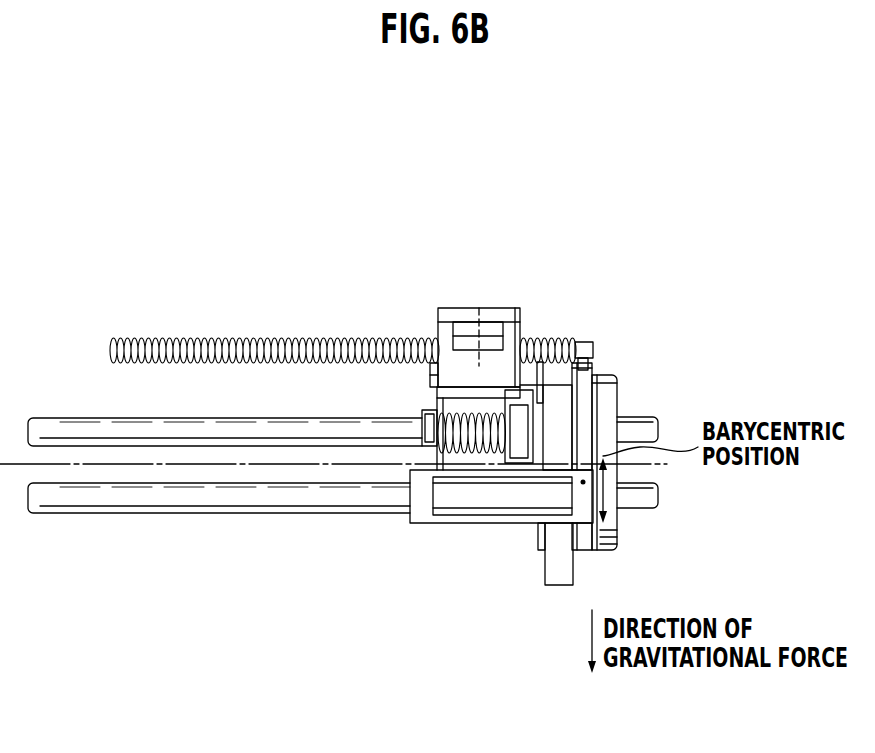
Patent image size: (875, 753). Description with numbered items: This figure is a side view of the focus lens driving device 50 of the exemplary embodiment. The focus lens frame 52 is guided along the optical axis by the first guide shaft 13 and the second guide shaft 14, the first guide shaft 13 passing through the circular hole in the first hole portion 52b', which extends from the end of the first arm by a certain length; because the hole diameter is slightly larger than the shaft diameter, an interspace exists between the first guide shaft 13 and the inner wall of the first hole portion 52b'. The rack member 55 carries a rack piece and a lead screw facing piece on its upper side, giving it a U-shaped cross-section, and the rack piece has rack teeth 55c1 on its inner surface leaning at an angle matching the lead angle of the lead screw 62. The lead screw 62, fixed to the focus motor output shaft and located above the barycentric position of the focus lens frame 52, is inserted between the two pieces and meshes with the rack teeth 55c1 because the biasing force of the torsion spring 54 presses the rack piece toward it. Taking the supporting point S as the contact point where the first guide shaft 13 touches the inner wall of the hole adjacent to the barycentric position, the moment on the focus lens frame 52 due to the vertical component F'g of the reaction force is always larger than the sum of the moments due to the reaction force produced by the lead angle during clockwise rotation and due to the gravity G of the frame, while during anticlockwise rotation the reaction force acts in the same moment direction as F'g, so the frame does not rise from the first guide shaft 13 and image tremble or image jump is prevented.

The first guide shaft 13 is at (57, 500).
The guide bar 14 is at (57, 428).
The lens driving unit 50 is at (390, 229).
The focus lens frame 52 is at (560, 594).
The first hole portion 52b' is at (501, 542).
The torsion spring 54 is at (446, 455).
The rack member 55 is at (469, 296).
The rack teeth 55c1 is at (481, 308).
The lead screw 62 is at (170, 366).
The supporting point S is at (583, 484).
The gravity G is at (602, 506).
The vertical component of reaction force F'g is at (409, 330).